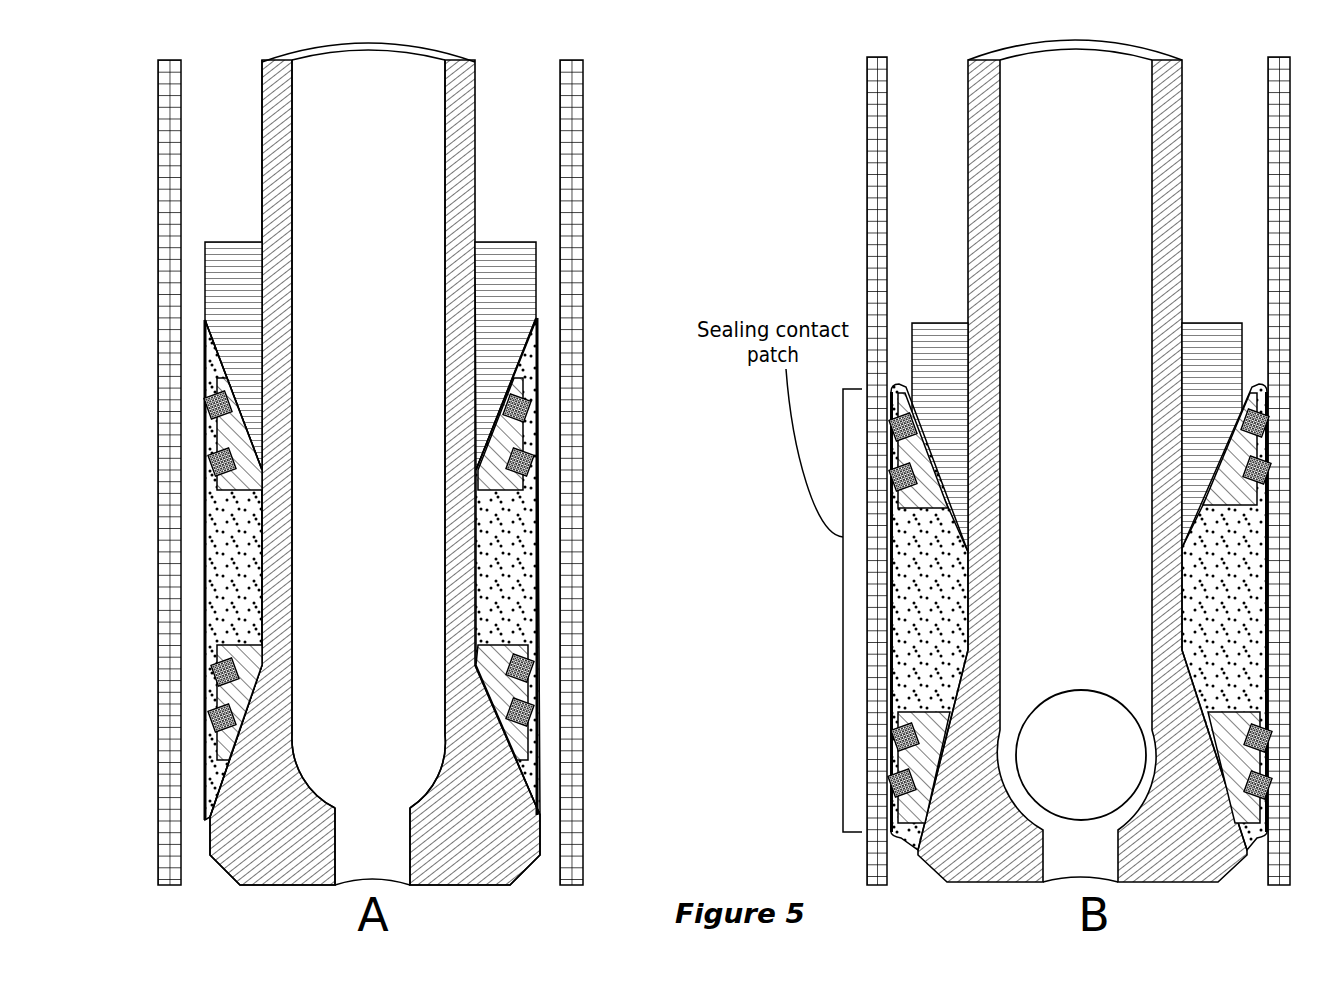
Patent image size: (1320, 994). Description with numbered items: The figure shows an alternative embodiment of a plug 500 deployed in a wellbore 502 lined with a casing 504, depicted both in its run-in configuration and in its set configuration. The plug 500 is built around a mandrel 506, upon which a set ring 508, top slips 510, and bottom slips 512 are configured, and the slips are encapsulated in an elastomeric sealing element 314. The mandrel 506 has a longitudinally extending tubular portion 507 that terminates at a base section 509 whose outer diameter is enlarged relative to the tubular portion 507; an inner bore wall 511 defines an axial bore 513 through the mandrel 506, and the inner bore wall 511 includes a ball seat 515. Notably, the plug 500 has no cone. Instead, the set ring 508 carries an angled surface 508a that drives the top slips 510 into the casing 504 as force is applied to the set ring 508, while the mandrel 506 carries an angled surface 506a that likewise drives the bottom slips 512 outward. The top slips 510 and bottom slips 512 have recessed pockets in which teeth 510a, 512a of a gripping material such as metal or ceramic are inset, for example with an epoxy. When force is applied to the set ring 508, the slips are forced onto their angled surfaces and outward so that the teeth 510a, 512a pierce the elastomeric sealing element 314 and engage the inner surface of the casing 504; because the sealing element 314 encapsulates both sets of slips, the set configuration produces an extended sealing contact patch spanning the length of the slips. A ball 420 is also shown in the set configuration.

The plug 500 is at (256, 38).
The wellbore 502 is at (622, 22).
The casing 504 is at (583, 180).
The mandrel 506 is at (292, 135).
The angled surface 506a is at (493, 700).
The tubular portion 507 is at (283, 492).
The set ring 508 is at (525, 262).
The angled surface 508a is at (488, 440).
The base section 509 is at (510, 848).
The top slips 510 is at (520, 385).
The teeth 510a is at (528, 455).
The inner bore wall 511 is at (445, 92).
The bottom slips 512 is at (527, 740).
The teeth 512a is at (530, 665).
The axial bore 513 is at (368, 397).
The ball seat 515 is at (318, 795).
The elastomeric sealing element 314 is at (525, 545).
The ball 420 is at (1081, 755).